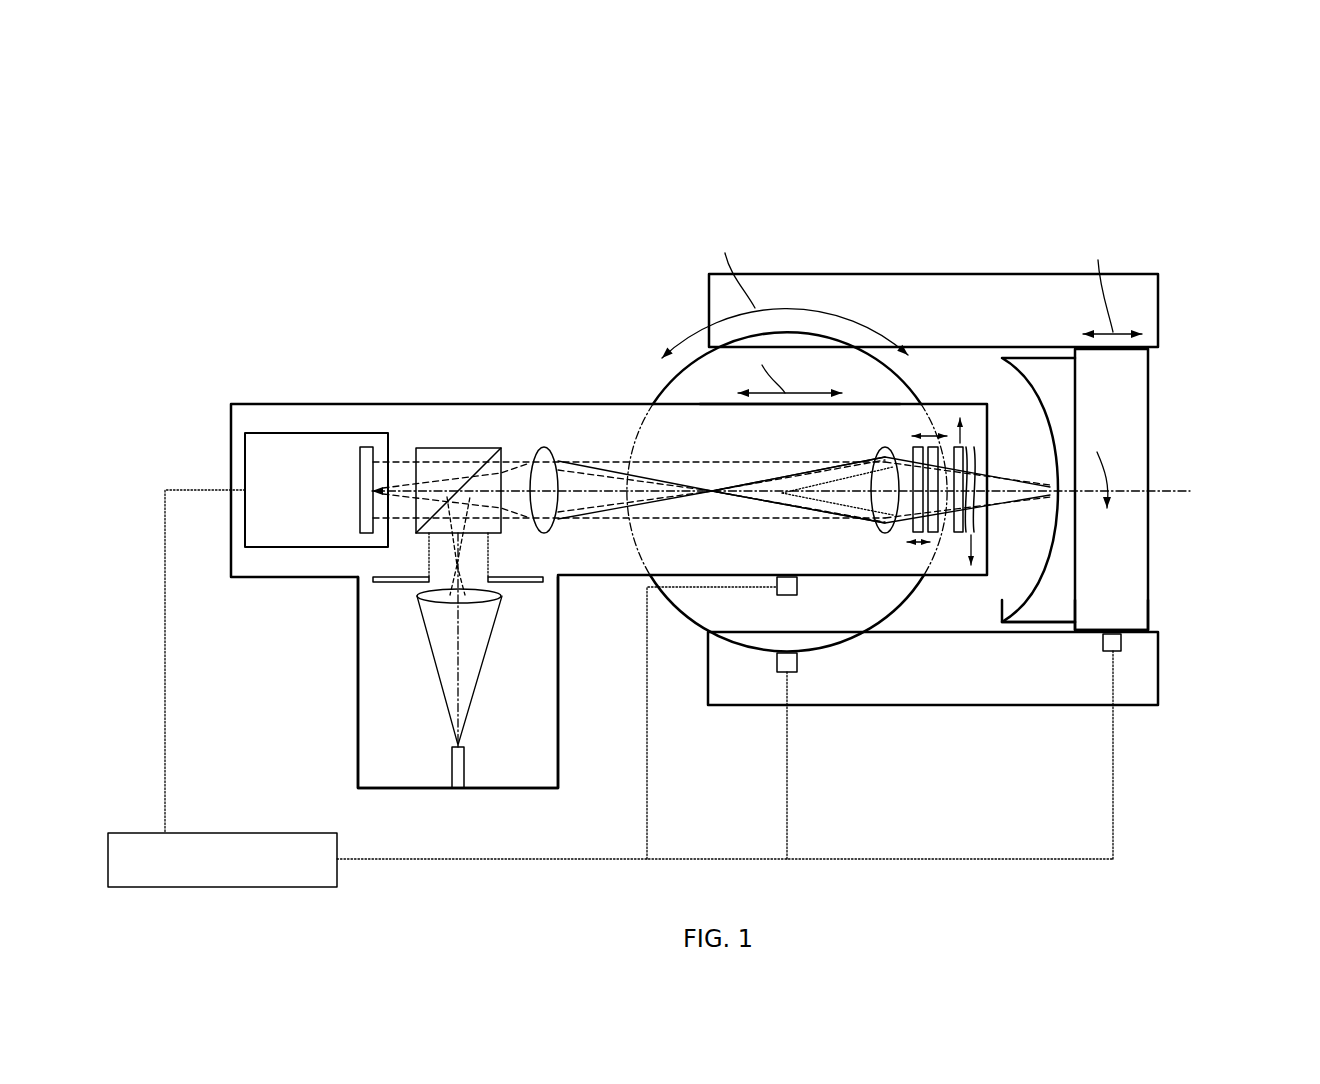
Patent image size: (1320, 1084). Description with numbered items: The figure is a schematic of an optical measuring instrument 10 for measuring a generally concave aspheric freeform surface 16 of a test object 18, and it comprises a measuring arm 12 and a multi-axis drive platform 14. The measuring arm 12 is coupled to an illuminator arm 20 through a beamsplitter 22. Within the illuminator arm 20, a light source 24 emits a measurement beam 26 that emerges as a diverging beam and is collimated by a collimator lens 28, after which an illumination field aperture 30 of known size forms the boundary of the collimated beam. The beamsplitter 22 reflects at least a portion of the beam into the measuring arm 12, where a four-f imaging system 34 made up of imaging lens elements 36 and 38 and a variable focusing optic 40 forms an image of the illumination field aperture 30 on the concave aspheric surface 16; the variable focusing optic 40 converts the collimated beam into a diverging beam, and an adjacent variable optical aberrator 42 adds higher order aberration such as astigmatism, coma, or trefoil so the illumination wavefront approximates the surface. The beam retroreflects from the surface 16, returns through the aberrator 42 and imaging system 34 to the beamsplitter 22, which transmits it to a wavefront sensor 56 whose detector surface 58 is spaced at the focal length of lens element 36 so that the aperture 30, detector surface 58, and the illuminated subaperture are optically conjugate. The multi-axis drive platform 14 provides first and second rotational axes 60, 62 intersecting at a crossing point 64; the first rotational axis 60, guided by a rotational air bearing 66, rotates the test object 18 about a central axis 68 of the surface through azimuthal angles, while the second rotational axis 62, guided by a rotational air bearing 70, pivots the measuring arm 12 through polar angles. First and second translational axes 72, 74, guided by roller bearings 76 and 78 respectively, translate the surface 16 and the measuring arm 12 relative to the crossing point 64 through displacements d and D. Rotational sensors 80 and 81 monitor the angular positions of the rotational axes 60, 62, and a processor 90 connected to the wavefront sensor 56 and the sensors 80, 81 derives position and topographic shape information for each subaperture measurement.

The optical measuring instrument 10 is at (357, 226).
The measuring arm 12 is at (308, 404).
The multi-axis drive platform 14 is at (1138, 272).
The concave aspheric freeform surface 16 is at (1003, 568).
The test object 18 is at (1037, 370).
The illuminator arm 20 is at (358, 705).
The beamsplitter 22 is at (487, 447).
The light source 24 is at (465, 772).
The measurement beam 26 is at (492, 641).
The collimator lens 28 is at (415, 598).
The illumination field aperture 30 is at (430, 580).
The 4f imaging system 34 is at (662, 457).
The imaging lens element 36 is at (543, 447).
The imaging lens element 38 is at (910, 357).
The variable focusing optic 40 is at (917, 445).
The variable optical aberrator 42 is at (973, 445).
The wavefront sensor 56 is at (260, 450).
The detector surface 58 is at (378, 452).
The first rotational axis 60 is at (1195, 489).
The second rotational axis 62 is at (798, 510).
The crossing point 64 is at (790, 483).
The rotational air bearing 66 is at (1154, 595).
The central axis 68 is at (1195, 489).
The rotational air bearing 70 is at (842, 638).
The first translational axis 72 is at (1195, 489).
The second translational axis 74 is at (1157, 490).
The roller bearing 76 is at (1123, 627).
The roller bearing 78 is at (810, 404).
The rotational sensor 80 is at (1121, 642).
The rotational sensor 81 is at (800, 660).
The processor 90 is at (610, 688).